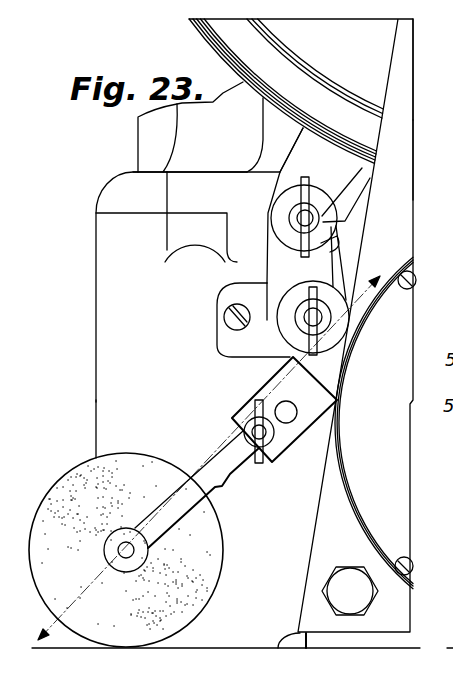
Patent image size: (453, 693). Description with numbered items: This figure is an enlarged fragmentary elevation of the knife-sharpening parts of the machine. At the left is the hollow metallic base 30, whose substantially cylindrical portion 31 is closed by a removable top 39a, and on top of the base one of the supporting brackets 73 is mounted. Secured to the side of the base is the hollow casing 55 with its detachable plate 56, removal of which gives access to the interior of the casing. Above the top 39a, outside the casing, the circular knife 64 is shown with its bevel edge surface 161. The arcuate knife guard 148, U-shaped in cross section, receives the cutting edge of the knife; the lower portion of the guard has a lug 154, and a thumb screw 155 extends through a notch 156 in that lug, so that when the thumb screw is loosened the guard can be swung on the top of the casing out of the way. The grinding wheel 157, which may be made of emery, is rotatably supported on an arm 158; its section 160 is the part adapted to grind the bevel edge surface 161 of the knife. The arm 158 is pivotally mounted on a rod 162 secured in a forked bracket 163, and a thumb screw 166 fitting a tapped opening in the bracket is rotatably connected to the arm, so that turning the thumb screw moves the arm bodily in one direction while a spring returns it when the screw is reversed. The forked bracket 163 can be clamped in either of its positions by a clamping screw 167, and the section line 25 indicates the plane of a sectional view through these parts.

The section line 25- 25 is at (215, 453).
The hollow metallic base 30 is at (112, 346).
The cylindrical portion 31 is at (112, 395).
The removable section or top 39a is at (146, 194).
The hollow casing 55 is at (402, 147).
The detachable plate 56 is at (375, 422).
The circular knife 64 is at (301, 325).
The supporting bracket 73 is at (207, 147).
The arcuate knife guard 148 is at (282, 91).
The lug 154 is at (308, 150).
The thumb screw 155 is at (298, 208).
The notch 156 is at (346, 234).
The grinding wheel 157 is at (103, 551).
The arm 158 is at (213, 462).
The section of grinding wheel 160 is at (132, 446).
The bevel edge surface 161 is at (373, 67).
The rod 162 is at (282, 406).
The forked bracket 163 is at (246, 418).
The thumb screw 166 is at (275, 448).
The clamping screw 167 is at (332, 327).